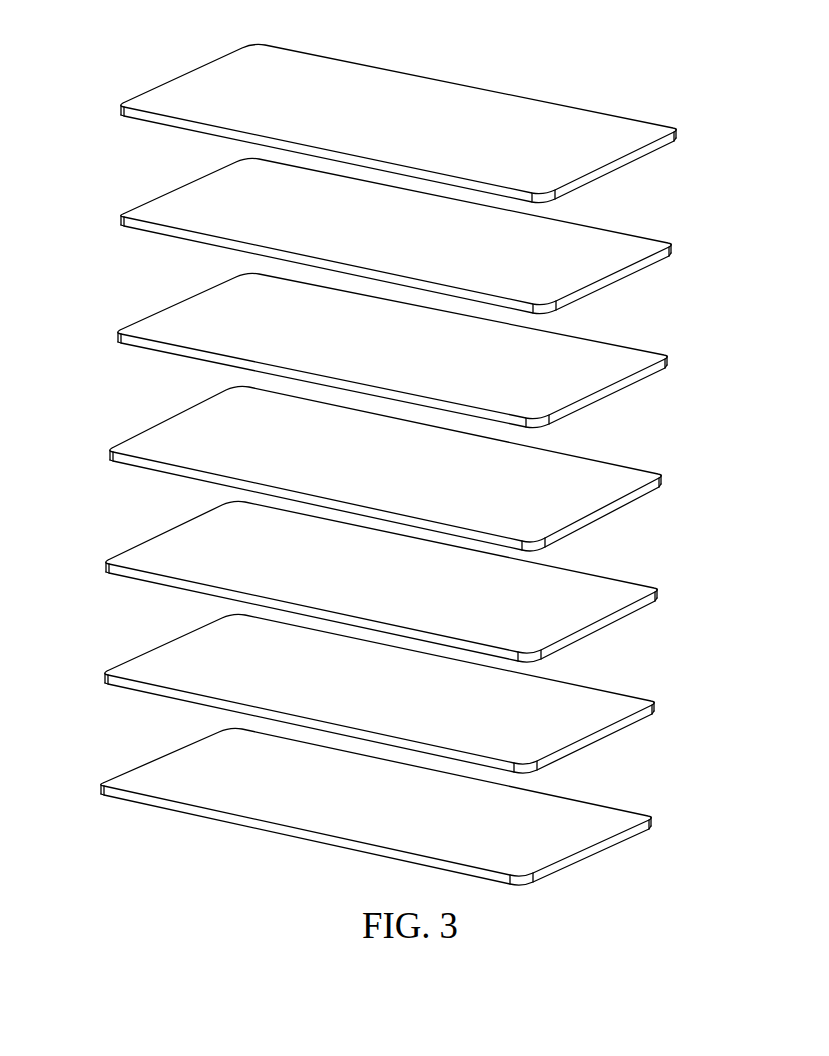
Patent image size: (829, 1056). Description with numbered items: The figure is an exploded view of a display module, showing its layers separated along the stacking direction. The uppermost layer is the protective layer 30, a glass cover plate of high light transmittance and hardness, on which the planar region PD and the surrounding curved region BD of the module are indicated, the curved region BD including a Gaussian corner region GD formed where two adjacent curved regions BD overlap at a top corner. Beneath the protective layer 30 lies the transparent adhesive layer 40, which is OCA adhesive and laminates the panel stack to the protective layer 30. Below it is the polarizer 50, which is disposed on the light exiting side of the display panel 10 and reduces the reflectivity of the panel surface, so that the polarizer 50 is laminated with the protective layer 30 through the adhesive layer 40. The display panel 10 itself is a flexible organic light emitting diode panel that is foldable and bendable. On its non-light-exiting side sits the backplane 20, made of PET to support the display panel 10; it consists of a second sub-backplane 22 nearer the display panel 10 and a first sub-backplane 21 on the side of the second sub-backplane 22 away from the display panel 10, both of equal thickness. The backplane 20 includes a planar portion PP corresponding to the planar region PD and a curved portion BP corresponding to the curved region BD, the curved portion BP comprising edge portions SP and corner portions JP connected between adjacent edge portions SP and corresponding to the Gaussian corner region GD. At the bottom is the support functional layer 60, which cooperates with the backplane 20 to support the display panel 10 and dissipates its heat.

The display panel 10 is at (622, 476).
The backplane 20 is at (413, 626).
The first sub-backplane 21 is at (416, 693).
The second sub-backplane 22 is at (390, 572).
The protective layer 30 is at (381, 122).
The transparent adhesive layer 40 is at (622, 250).
The polarizer 50 is at (622, 365).
The support functional layer 60 is at (622, 806).
The planar region PD is at (423, 109).
The Gaussian corner region GD is at (122, 107).
The curved region BD is at (181, 118).
The planar portion PP is at (195, 540).
The corner portion JP is at (113, 560).
The edge portion SP is at (157, 578).
The curved portion BP is at (355, 612).